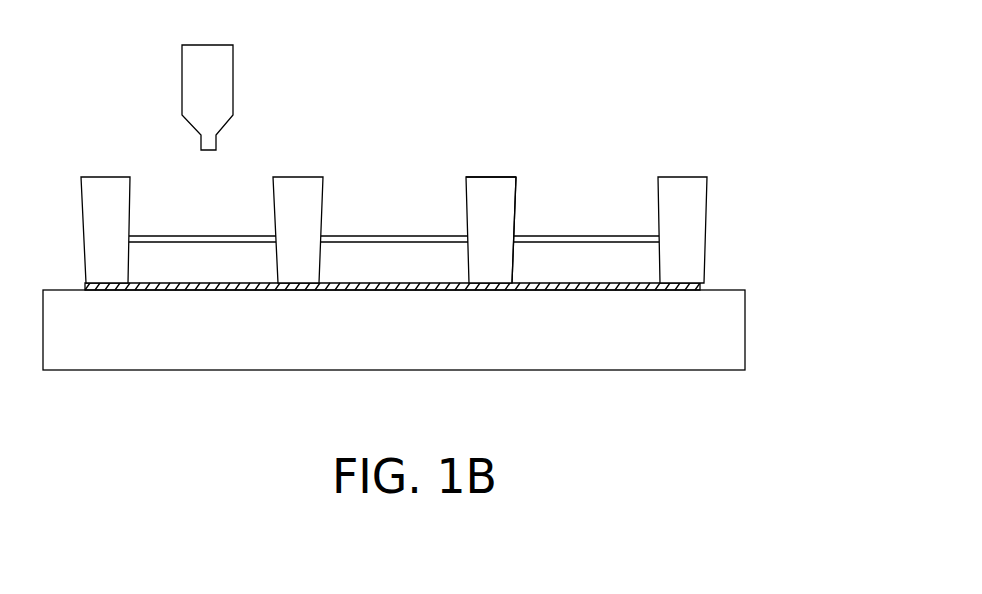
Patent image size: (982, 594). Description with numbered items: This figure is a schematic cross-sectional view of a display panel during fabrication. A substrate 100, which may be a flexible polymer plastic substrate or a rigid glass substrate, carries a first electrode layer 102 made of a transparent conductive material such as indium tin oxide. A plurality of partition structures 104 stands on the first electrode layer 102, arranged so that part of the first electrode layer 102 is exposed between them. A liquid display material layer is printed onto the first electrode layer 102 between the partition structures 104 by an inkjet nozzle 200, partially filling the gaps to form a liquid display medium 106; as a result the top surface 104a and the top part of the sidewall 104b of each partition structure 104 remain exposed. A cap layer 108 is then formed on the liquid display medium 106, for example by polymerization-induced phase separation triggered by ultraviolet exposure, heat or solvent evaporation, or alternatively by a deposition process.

The substrate 100 is at (720, 347).
The first electrode layer 102 is at (692, 285).
The partition structures 104 is at (687, 202).
The top surface 104a is at (483, 177).
The sidewall 104b is at (517, 195).
The liquid display medium 106 is at (648, 265).
The cap layer 108 is at (655, 237).
The inkjet nozzle 200 is at (233, 80).